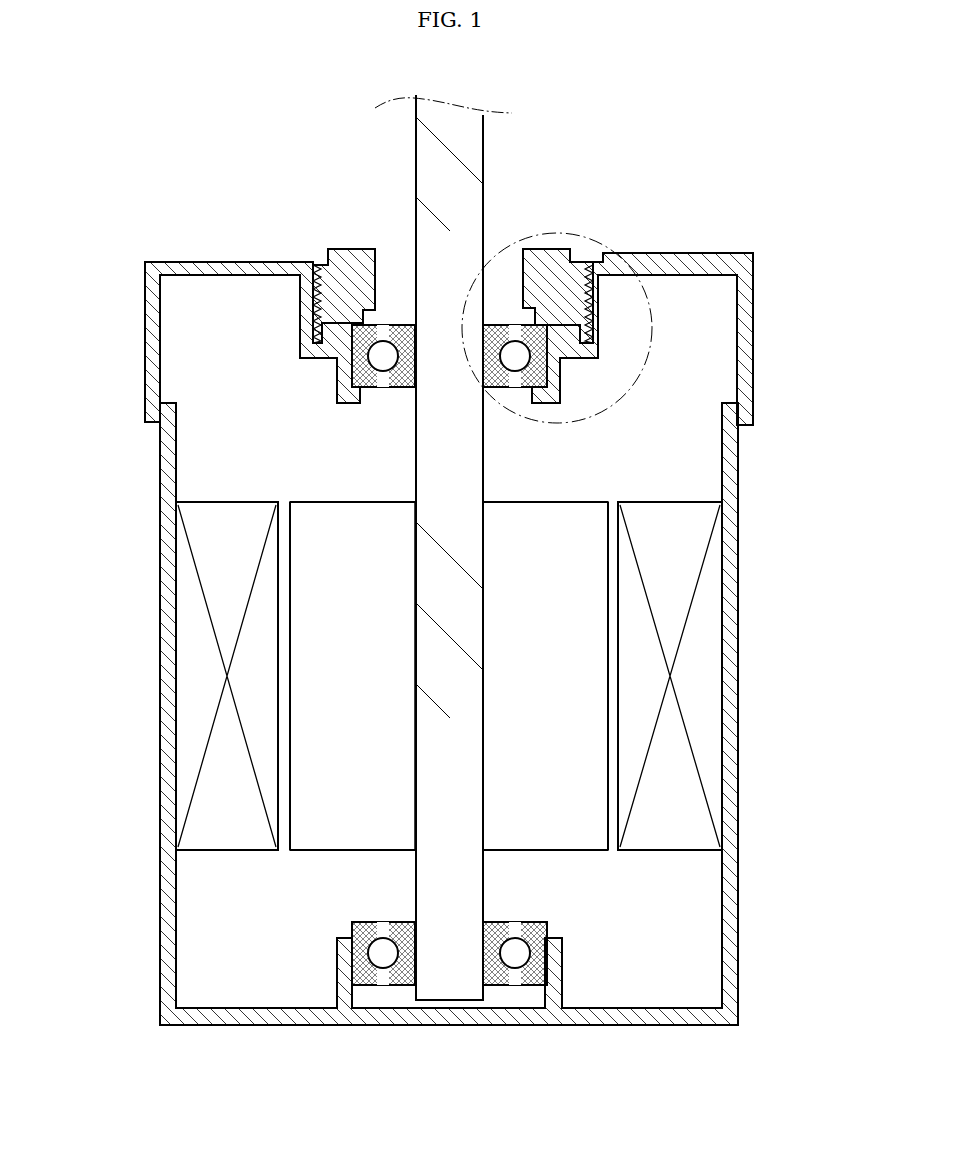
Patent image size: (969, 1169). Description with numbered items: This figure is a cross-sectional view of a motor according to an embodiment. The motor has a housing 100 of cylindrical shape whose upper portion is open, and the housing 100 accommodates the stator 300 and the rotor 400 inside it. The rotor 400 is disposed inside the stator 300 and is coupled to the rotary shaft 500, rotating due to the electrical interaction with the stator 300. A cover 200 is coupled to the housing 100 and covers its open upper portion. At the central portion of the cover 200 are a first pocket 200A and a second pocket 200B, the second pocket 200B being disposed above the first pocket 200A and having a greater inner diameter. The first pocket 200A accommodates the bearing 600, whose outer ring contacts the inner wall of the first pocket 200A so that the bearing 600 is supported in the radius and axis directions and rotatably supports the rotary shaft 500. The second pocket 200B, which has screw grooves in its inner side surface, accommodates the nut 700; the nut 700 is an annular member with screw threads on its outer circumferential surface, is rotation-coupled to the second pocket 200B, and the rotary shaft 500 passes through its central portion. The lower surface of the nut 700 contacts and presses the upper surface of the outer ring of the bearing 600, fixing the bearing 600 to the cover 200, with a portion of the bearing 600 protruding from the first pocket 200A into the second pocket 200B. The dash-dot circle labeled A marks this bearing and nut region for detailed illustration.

The housing 100 is at (752, 532).
The cover 200 is at (426, 317).
The first pocket 200A is at (392, 401).
The second pocket 200B is at (388, 268).
The stator 300 is at (703, 644).
The rotor 400 is at (548, 708).
The rotary shaft 500 is at (448, 777).
The bearing 600 is at (350, 361).
The nut 700 is at (549, 249).
The detail region A is at (500, 262).